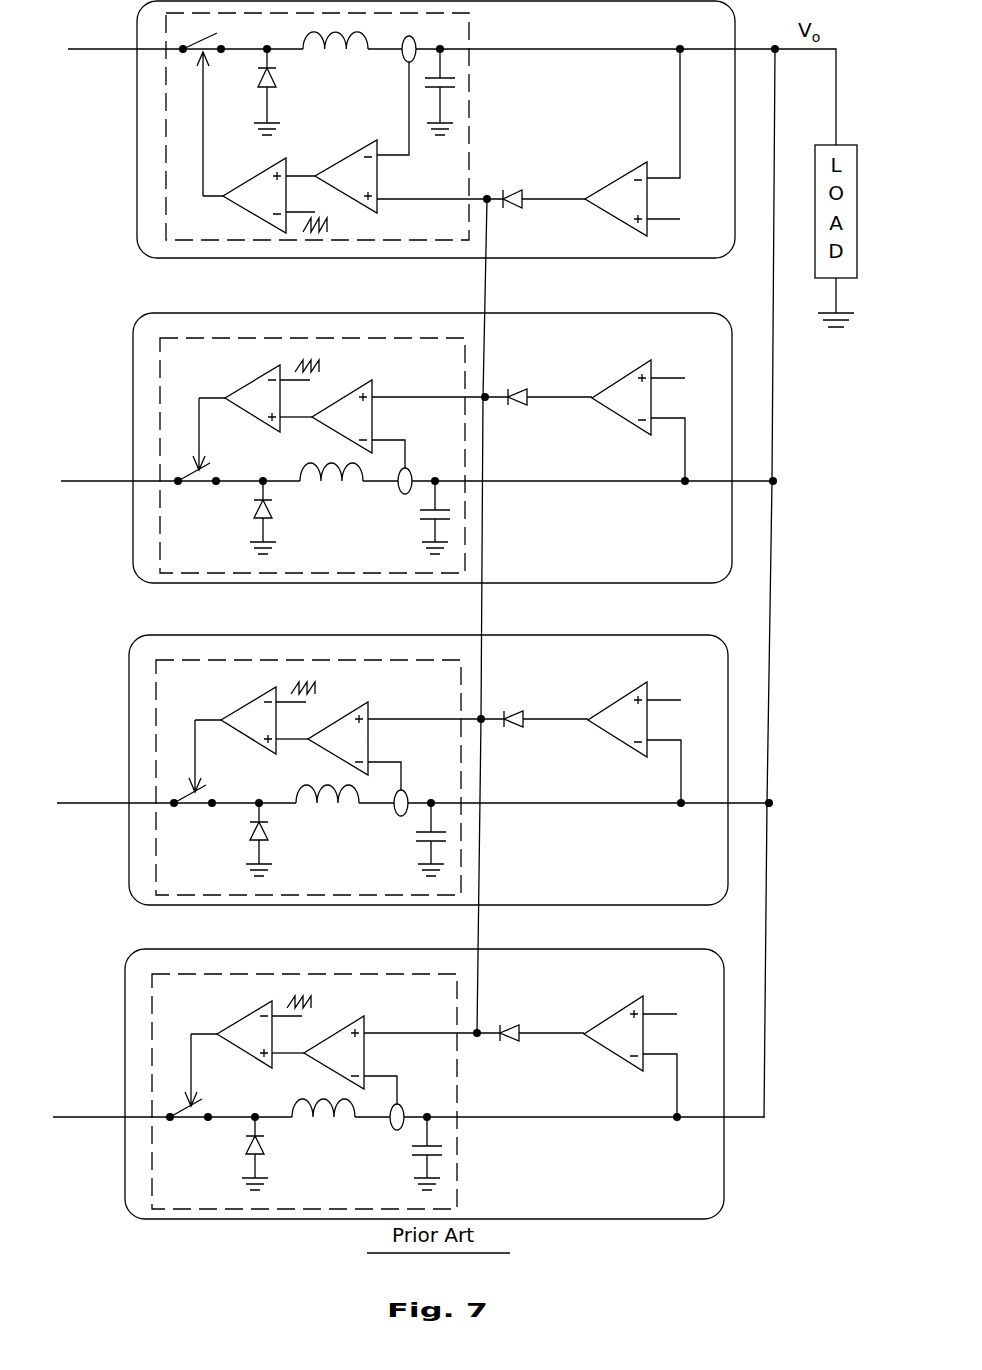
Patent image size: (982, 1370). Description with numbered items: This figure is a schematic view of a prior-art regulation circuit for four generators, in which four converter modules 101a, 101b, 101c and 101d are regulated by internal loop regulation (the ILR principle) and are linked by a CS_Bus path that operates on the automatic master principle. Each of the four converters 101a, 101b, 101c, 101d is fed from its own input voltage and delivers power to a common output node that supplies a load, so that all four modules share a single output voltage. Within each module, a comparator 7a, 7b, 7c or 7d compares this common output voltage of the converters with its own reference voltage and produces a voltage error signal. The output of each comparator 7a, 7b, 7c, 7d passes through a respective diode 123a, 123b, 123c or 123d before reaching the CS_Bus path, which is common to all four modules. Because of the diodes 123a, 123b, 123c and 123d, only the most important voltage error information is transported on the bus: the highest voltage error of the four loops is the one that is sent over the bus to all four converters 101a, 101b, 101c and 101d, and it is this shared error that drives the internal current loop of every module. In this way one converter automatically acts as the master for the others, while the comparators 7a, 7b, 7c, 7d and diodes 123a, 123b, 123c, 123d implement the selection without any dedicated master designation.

The power converter module 1 101a is at (165, 110).
The power converter module 2 101b is at (160, 378).
The power converter module 3 101c is at (406, 770).
The power converter module 4 101d is at (400, 1084).
The diode 123a is at (513, 188).
The diode 123b is at (520, 388).
The diode 123c is at (534, 683).
The diode of module 4 123d is at (530, 997).
The comparator 7a is at (630, 175).
The comparator 7b is at (628, 420).
The comparator 7c is at (605, 729).
The comparator 7d is at (601, 1043).